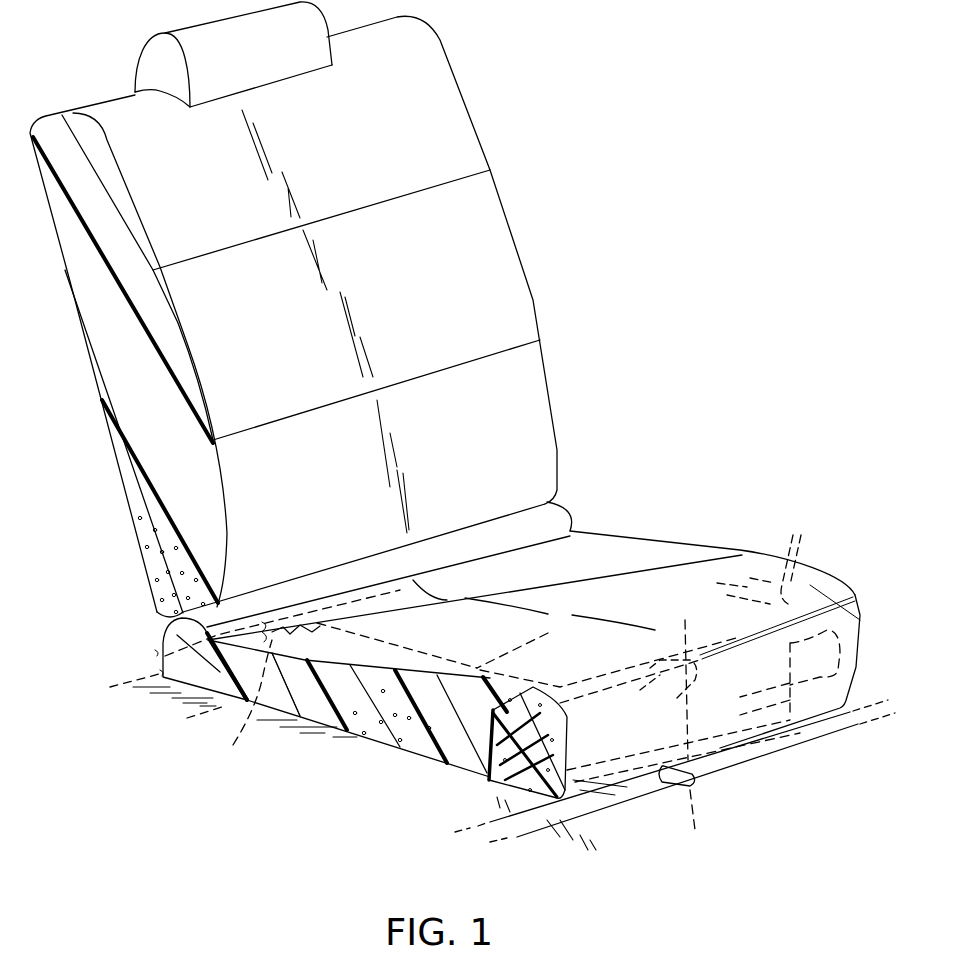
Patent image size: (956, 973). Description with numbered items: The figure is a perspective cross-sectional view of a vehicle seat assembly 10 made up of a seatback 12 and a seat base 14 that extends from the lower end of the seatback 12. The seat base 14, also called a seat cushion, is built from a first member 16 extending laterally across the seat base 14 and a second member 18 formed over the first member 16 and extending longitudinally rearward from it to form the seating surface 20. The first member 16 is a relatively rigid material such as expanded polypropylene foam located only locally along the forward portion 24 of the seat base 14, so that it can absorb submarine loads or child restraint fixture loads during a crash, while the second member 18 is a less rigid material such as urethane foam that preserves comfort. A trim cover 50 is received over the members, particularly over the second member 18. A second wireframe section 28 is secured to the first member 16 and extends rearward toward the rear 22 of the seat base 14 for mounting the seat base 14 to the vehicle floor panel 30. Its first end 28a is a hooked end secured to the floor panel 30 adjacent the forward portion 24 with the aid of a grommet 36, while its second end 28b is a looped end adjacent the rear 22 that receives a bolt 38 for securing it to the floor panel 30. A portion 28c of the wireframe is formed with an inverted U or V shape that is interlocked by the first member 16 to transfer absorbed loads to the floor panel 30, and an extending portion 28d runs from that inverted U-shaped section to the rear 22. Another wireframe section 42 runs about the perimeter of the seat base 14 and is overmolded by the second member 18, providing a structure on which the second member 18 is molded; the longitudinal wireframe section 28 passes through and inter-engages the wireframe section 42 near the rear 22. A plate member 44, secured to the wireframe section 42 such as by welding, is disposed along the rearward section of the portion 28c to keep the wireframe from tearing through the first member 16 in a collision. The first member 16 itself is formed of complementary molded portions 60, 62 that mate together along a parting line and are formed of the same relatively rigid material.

The vehicle seat assembly 10 is at (462, 440).
The seatback 12 is at (489, 242).
The seat base 14 is at (498, 676).
The first member 16 is at (494, 761).
The second member 18 is at (353, 723).
The seating surface 20 is at (596, 573).
The rear of the seat base 22 is at (162, 650).
The forward portion of the seat base 24 is at (812, 693).
The second wireframe section 28 is at (502, 721).
The first end of the second wireframe section 28a is at (712, 736).
The second end of the second wireframe section 28b is at (229, 700).
The portion of the second wireframe section 28c is at (783, 672).
The extending portion of the second wireframe section 28d is at (535, 642).
The floor panel 30 is at (637, 786).
The grommet 36 is at (698, 766).
The bolt 38 is at (268, 640).
The wireframe section 42 is at (788, 563).
The plate member 44 is at (680, 668).
The trim cover 50 is at (350, 707).
The first molded portion 60 is at (520, 760).
The second molded portion 62 is at (520, 712).